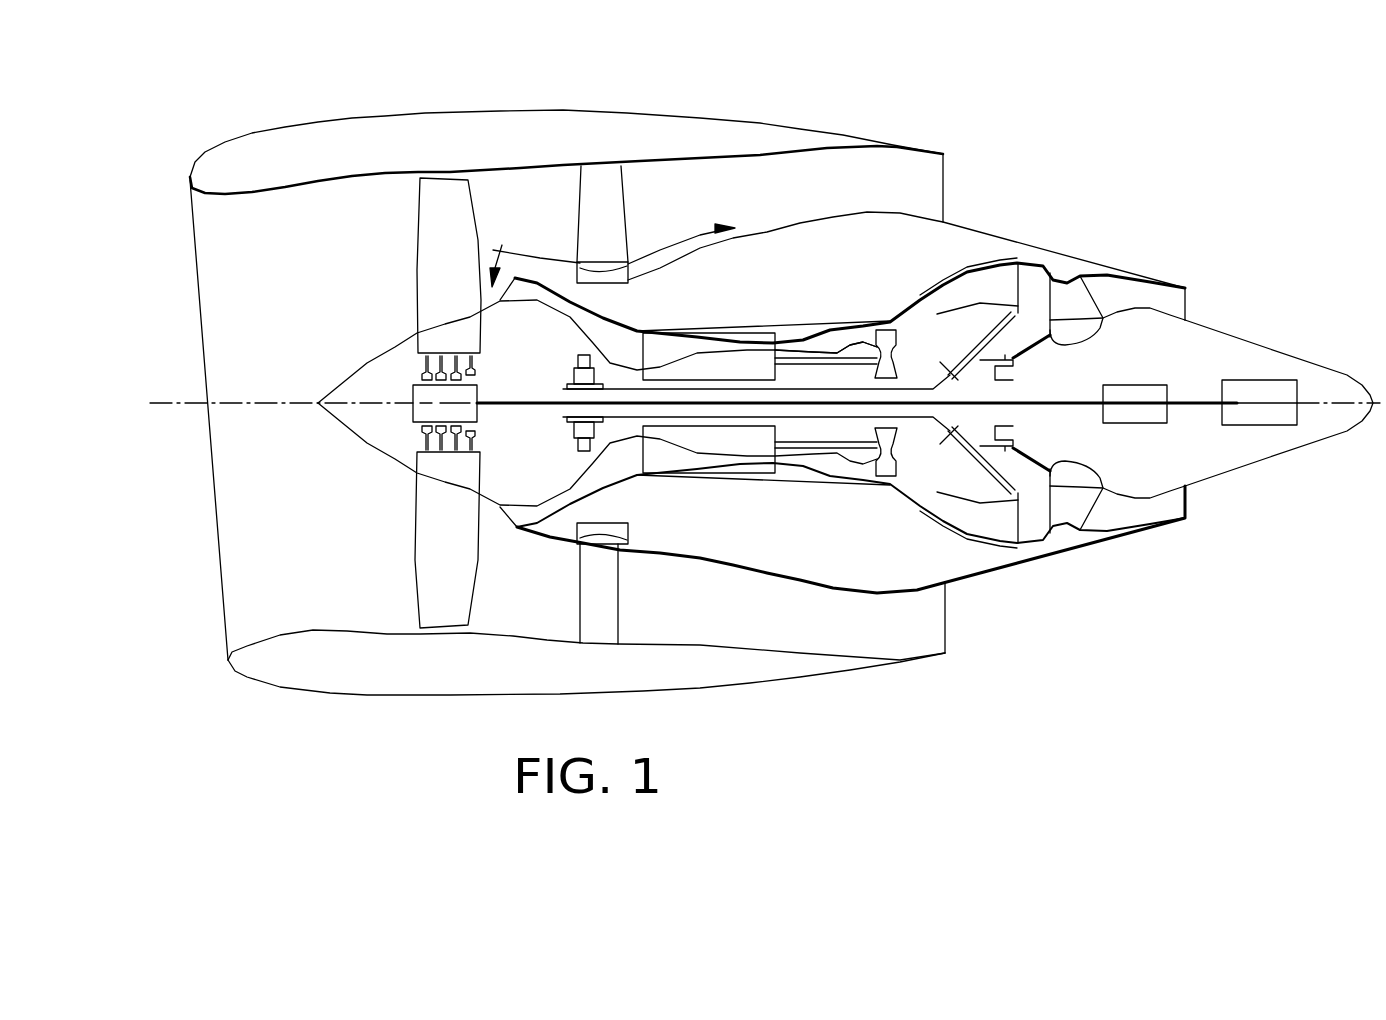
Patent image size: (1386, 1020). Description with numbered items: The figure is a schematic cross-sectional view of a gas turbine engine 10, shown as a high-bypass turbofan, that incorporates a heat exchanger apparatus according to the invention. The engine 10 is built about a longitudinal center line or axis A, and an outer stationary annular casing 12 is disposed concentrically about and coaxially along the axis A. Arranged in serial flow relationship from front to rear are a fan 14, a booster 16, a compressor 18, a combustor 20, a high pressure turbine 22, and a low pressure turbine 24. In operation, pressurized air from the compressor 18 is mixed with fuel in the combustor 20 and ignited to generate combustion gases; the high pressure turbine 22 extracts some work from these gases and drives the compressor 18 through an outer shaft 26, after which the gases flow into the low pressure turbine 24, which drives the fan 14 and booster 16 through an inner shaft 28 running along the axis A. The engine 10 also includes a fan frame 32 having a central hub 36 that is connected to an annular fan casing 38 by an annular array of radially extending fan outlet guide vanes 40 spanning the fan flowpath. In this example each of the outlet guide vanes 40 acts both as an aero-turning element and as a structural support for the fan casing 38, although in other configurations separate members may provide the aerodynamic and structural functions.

The gas turbine engine 10 is at (264, 106).
The outer stationary annular casing 12 is at (880, 480).
The fan 14 is at (443, 251).
The booster 16 is at (517, 517).
The compressor 18 is at (663, 347).
The combustor 20 is at (843, 340).
The high pressure turbine 22 is at (887, 337).
The low pressure turbine 24 is at (977, 283).
The outer shaft 26 is at (797, 467).
The inner shaft 28 is at (507, 402).
The fan frame 32 is at (636, 574).
The central hub 36 is at (617, 533).
The annular fan casing 38 is at (700, 645).
The fan outlet guide vanes 40 is at (587, 602).
The longitudinal center line or axis A is at (225, 403).